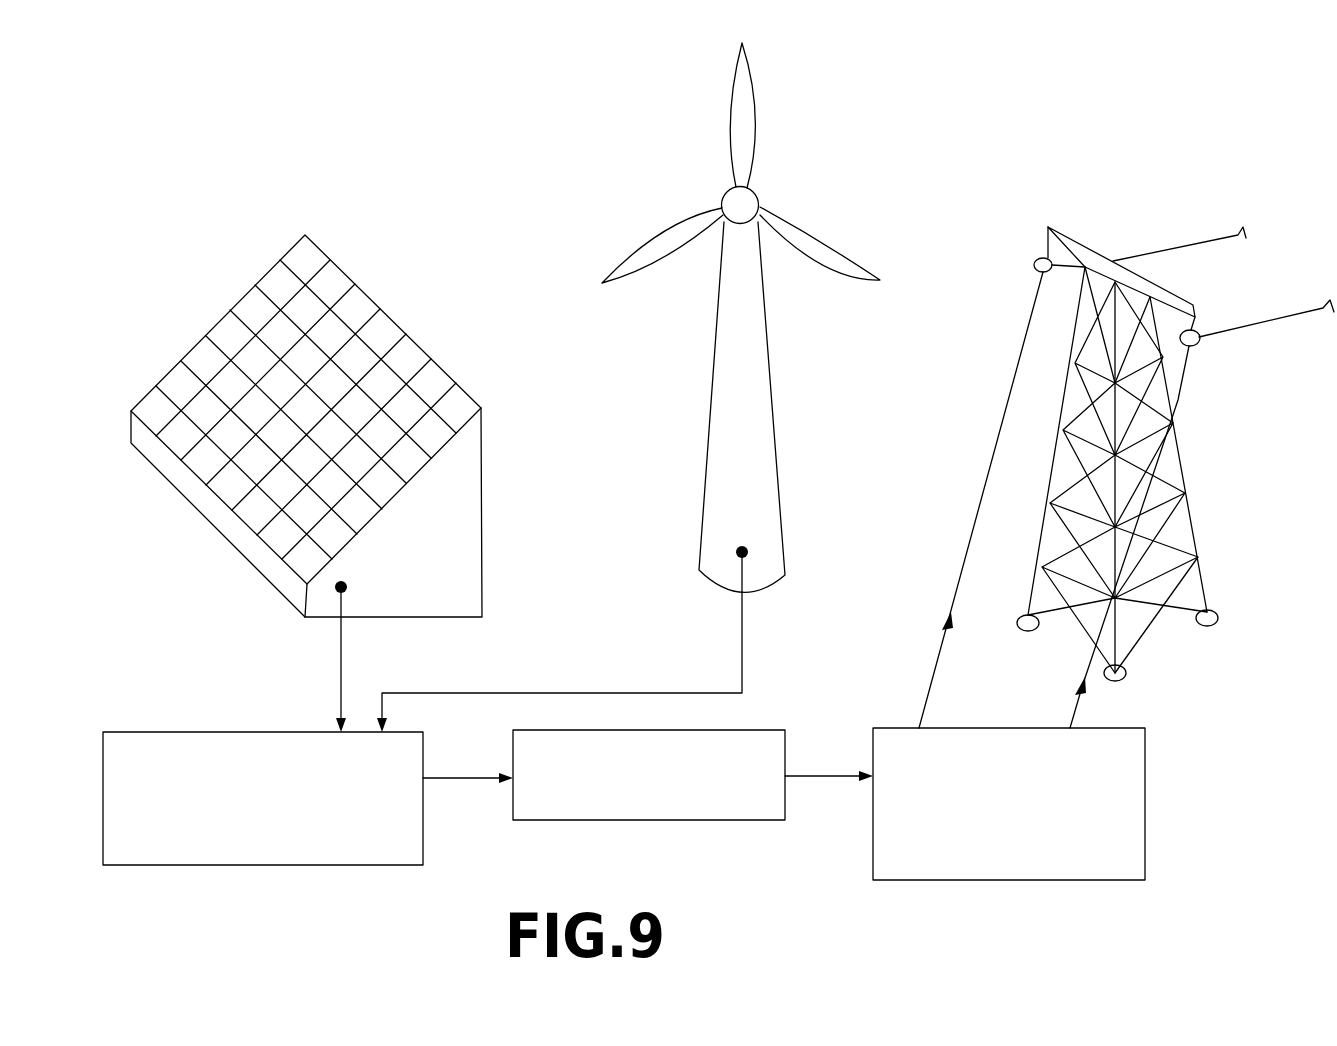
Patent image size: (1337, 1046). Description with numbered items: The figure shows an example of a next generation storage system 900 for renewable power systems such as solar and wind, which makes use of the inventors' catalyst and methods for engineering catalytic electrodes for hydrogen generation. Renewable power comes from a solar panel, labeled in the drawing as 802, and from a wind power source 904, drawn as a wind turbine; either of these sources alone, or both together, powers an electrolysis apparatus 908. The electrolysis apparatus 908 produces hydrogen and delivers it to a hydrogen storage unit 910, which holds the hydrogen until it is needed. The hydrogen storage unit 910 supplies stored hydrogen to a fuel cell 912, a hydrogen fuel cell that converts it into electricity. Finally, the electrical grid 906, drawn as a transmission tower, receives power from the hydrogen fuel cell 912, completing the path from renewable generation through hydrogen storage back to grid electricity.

The next generation storage system 900 is at (990, 170).
The solar panel 802 is at (408, 338).
The wind power source 904 is at (712, 455).
The electrical grid 906 is at (1118, 258).
The electrolysis apparatus 908 is at (283, 732).
The hydrogen storage unit 910 is at (760, 729).
The fuel cell 912 is at (1145, 755).